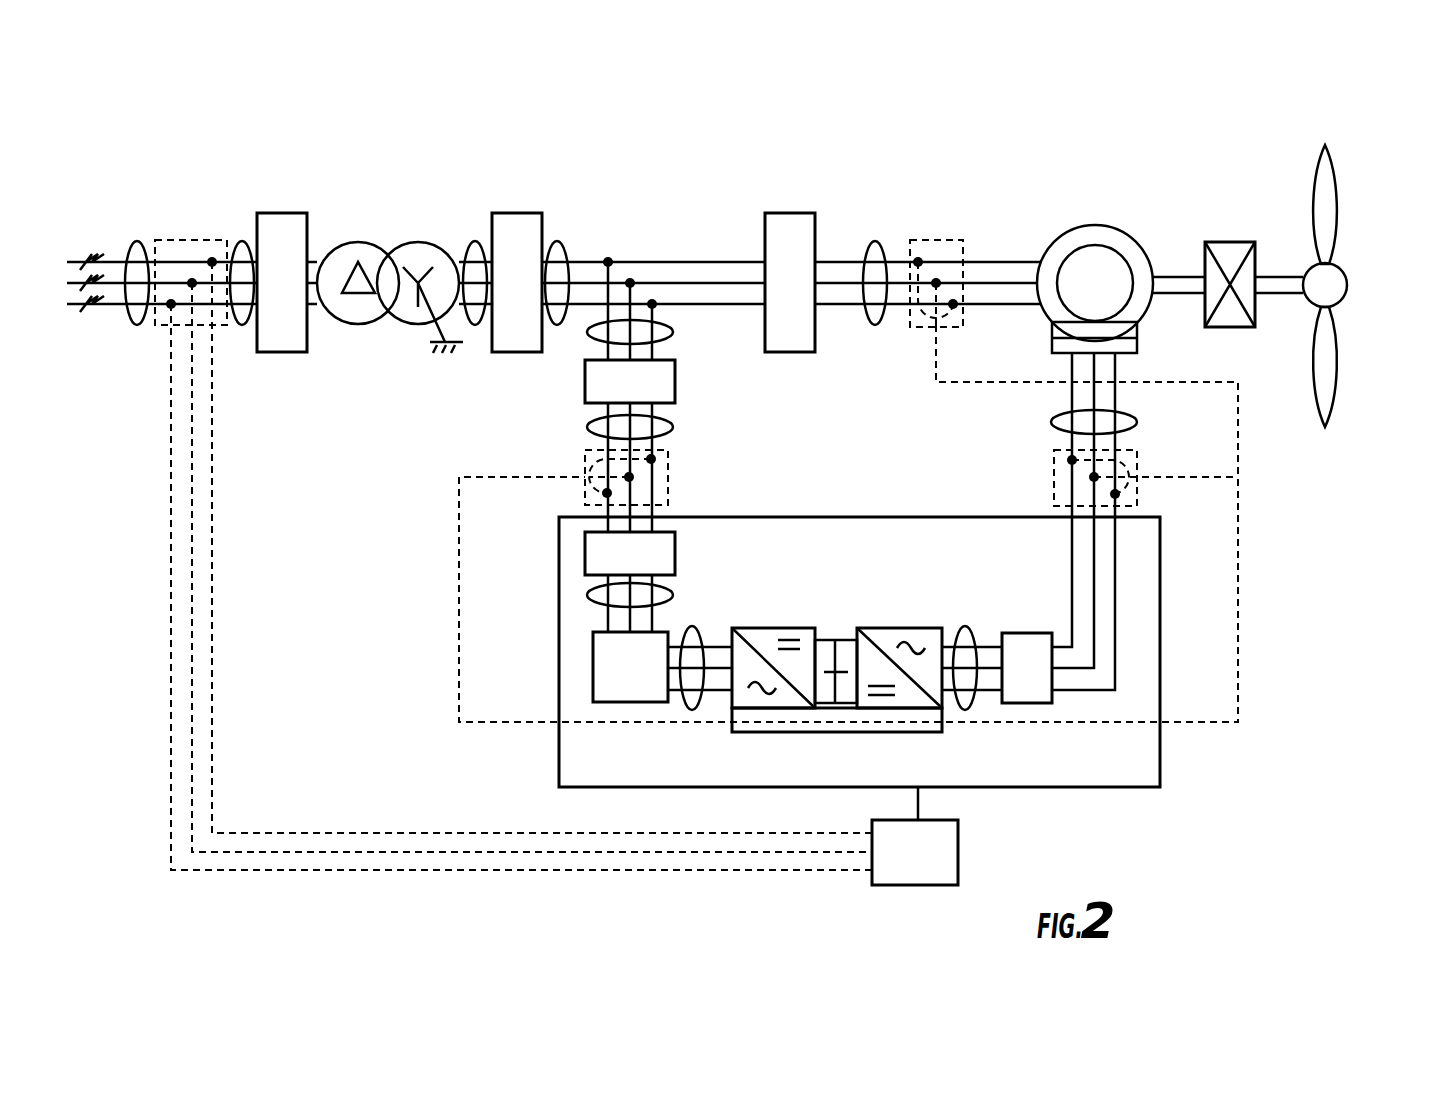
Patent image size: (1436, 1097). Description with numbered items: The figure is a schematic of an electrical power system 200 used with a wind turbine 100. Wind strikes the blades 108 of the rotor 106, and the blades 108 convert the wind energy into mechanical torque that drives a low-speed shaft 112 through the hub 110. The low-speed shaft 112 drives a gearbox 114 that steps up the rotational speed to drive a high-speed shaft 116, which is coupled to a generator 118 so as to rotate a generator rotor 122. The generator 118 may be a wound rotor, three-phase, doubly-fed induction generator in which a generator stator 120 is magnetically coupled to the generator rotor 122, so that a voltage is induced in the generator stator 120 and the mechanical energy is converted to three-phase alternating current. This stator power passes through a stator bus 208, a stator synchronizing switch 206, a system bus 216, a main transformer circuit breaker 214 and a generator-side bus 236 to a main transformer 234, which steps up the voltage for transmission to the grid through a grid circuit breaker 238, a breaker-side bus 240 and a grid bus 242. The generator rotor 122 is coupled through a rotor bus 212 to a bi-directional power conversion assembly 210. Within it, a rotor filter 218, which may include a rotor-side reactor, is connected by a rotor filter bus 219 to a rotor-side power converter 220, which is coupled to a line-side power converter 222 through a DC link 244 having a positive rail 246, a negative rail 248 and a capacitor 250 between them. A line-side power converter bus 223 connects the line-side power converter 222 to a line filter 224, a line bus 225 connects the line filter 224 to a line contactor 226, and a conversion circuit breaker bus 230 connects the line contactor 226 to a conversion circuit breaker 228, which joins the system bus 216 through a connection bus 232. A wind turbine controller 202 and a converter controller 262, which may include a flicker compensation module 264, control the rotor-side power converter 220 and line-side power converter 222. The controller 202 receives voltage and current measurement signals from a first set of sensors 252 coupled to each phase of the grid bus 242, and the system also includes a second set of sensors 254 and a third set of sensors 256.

The wind turbine 100 is at (1294, 120).
The rotor 106 is at (1354, 230).
The blades 108 is at (1338, 188).
The hub 110 is at (1350, 296).
The low-speed shaft 112 is at (1278, 277).
The gearbox 114 is at (1228, 242).
The high-speed shaft 116 is at (1172, 277).
The generator 118 is at (1085, 238).
The generator stator 120 is at (1100, 225).
The generator rotor 122 is at (1080, 263).
The electrical power system 200 is at (195, 136).
The wind turbine controller 202 is at (915, 836).
The stator synchronizing switch 206 is at (792, 213).
The stator bus 208 is at (877, 240).
The power conversion assembly 210 is at (1162, 598).
The rotor bus 212 is at (1130, 420).
The main transformer circuit breaker 214 is at (512, 213).
The system bus 216 is at (558, 240).
The rotor filter 218 is at (1027, 633).
The rotor filter bus 219 is at (965, 626).
The rotor-side power converter 220 is at (944, 703).
The line-side power converter 222 is at (732, 700).
The line-side power converter bus 223 is at (694, 627).
The line filter 224 is at (593, 660).
The line bus 225 is at (588, 597).
The line contactor 226 is at (585, 543).
The conversion circuit breaker 228 is at (585, 382).
The conversion circuit breaker bus 230 is at (587, 427).
The connection bus 232 is at (675, 332).
The main transformer 234 is at (418, 242).
The generator-side bus 236 is at (475, 240).
The grid circuit breaker 238 is at (283, 213).
The breaker-side bus 240 is at (240, 240).
The grid bus 242 is at (137, 240).
The DC link 244 is at (841, 596).
The positive rail 246 is at (929, 647).
The negative rail 248 is at (846, 708).
The capacitor 250 is at (829, 668).
The first set of voltage and electric current sensors 252 is at (156, 346).
The second set of voltage and electric current sensors 254 is at (964, 221).
The third set of voltage and electric current sensors 256 is at (1050, 478).
The converter controller 262 is at (895, 722).
The flicker compensation module 264 is at (668, 483).